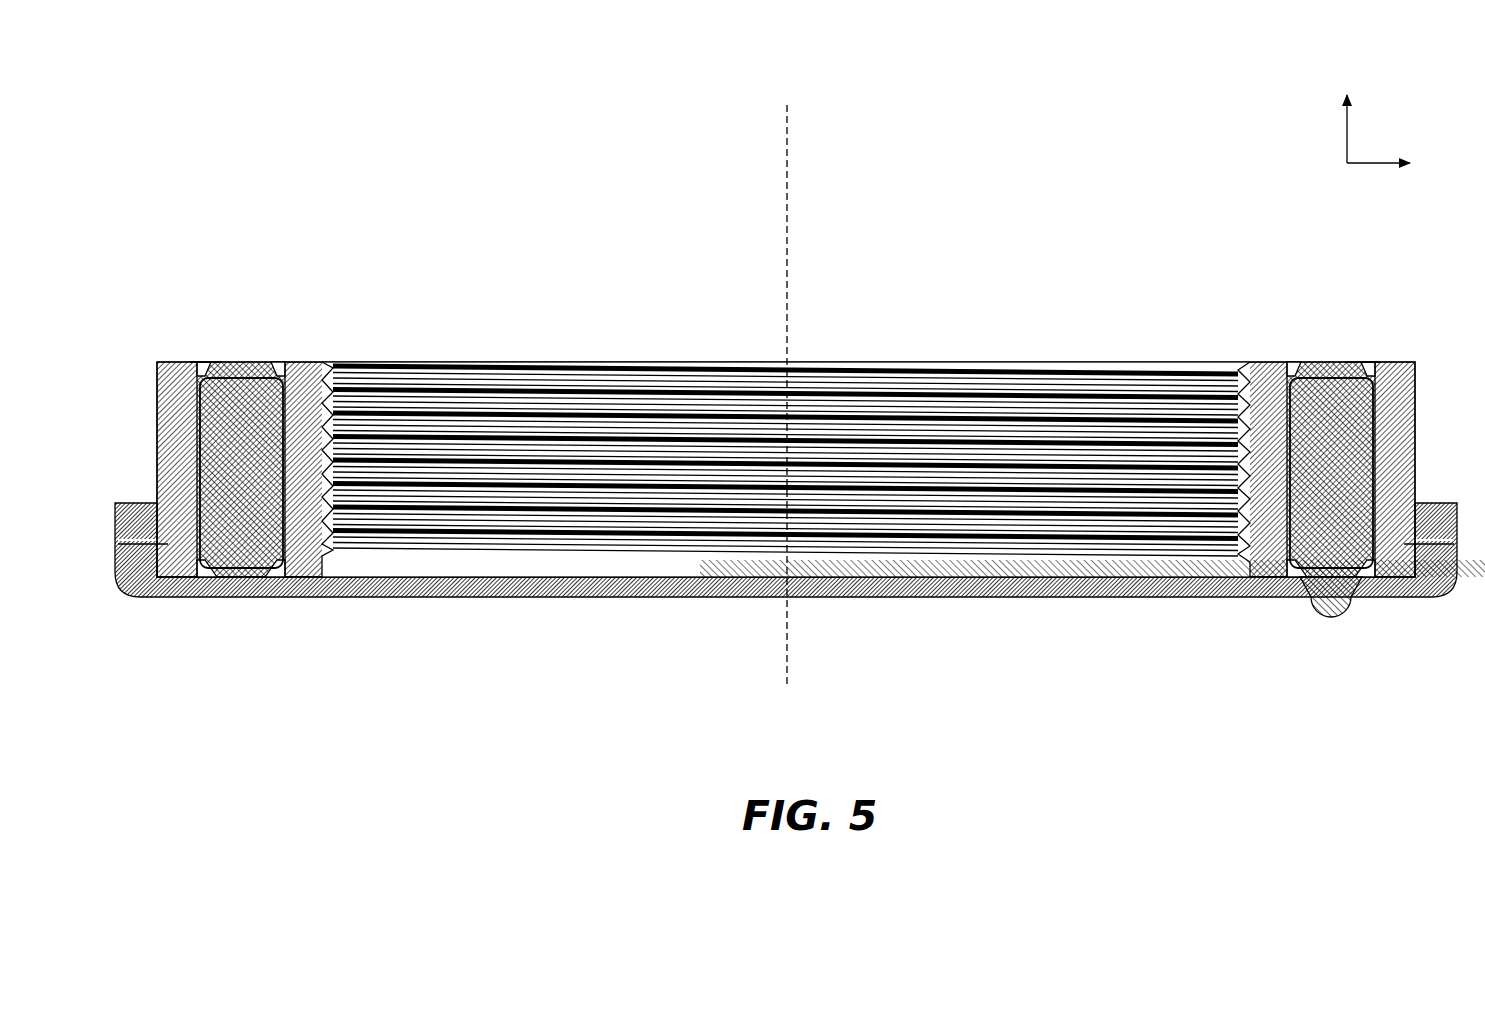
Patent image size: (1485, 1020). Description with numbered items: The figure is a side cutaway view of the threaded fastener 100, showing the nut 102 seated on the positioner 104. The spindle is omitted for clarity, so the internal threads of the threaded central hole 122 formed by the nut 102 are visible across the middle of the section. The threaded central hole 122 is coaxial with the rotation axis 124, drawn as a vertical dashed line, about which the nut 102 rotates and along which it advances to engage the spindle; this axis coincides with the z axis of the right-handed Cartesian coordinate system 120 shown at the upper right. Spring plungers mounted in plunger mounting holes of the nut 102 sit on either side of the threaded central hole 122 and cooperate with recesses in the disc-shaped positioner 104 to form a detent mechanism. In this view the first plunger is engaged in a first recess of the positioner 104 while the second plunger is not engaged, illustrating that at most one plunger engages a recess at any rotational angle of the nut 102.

The threaded fastener 100 is at (229, 110).
The nut 102 is at (793, 413).
The positioner 104 is at (145, 600).
The Cartesian coordinate system 120 is at (1401, 92).
The threaded central hole 122 is at (1255, 295).
The rotation axis 124 is at (790, 142).